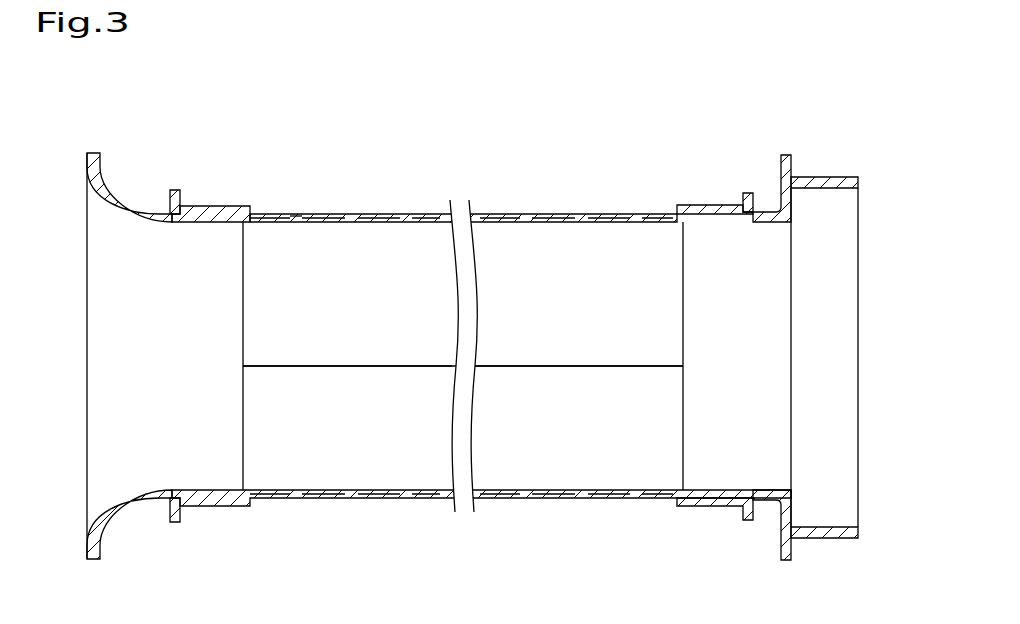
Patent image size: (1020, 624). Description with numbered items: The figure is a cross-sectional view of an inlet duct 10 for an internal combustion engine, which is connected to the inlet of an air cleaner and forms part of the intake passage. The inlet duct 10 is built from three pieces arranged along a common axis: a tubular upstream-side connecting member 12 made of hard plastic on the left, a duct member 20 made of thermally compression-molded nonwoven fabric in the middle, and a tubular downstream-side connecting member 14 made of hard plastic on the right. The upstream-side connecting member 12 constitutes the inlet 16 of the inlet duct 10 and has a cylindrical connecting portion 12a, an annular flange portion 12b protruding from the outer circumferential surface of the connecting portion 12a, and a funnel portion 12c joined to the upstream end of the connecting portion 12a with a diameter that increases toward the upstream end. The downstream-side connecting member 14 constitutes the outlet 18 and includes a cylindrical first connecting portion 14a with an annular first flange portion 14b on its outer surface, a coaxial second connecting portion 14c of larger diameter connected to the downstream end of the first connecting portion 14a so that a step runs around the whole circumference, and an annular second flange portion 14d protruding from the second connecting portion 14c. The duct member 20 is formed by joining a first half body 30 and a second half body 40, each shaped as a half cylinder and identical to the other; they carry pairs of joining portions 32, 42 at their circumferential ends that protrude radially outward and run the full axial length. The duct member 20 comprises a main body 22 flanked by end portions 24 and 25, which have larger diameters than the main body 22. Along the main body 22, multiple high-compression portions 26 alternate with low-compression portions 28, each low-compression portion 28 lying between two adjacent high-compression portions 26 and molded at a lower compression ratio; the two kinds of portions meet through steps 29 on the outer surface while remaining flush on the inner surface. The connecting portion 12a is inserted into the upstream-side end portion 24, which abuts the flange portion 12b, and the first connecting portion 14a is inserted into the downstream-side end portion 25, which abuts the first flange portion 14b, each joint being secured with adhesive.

The inlet duct 10 is at (499, 140).
The upstream-side connecting member 12 is at (238, 158).
The connecting portion 12a is at (218, 206).
The flange portion 12b is at (170, 190).
The funnel portion 12c is at (108, 155).
The downstream-side connecting member 14 is at (868, 98).
The first connecting portion 14a is at (711, 205).
The first flange portion 14b is at (748, 193).
The second connecting portion 14c is at (835, 177).
The second flange portion 14d is at (786, 155).
The inlet 16 is at (100, 431).
The outlet 18 is at (822, 379).
The duct member 20 is at (752, 558).
The main body 22 is at (412, 498).
The end portion 24 is at (208, 506).
The end portion 25 is at (688, 508).
The high-compression portion 26 is at (280, 212).
The low-compression portion 28 is at (340, 213).
The step 29 is at (300, 212).
The first half body 30 is at (648, 388).
The joining portion 32 is at (345, 365).
The second half body 40 is at (654, 310).
The joining portion 42 is at (378, 368).